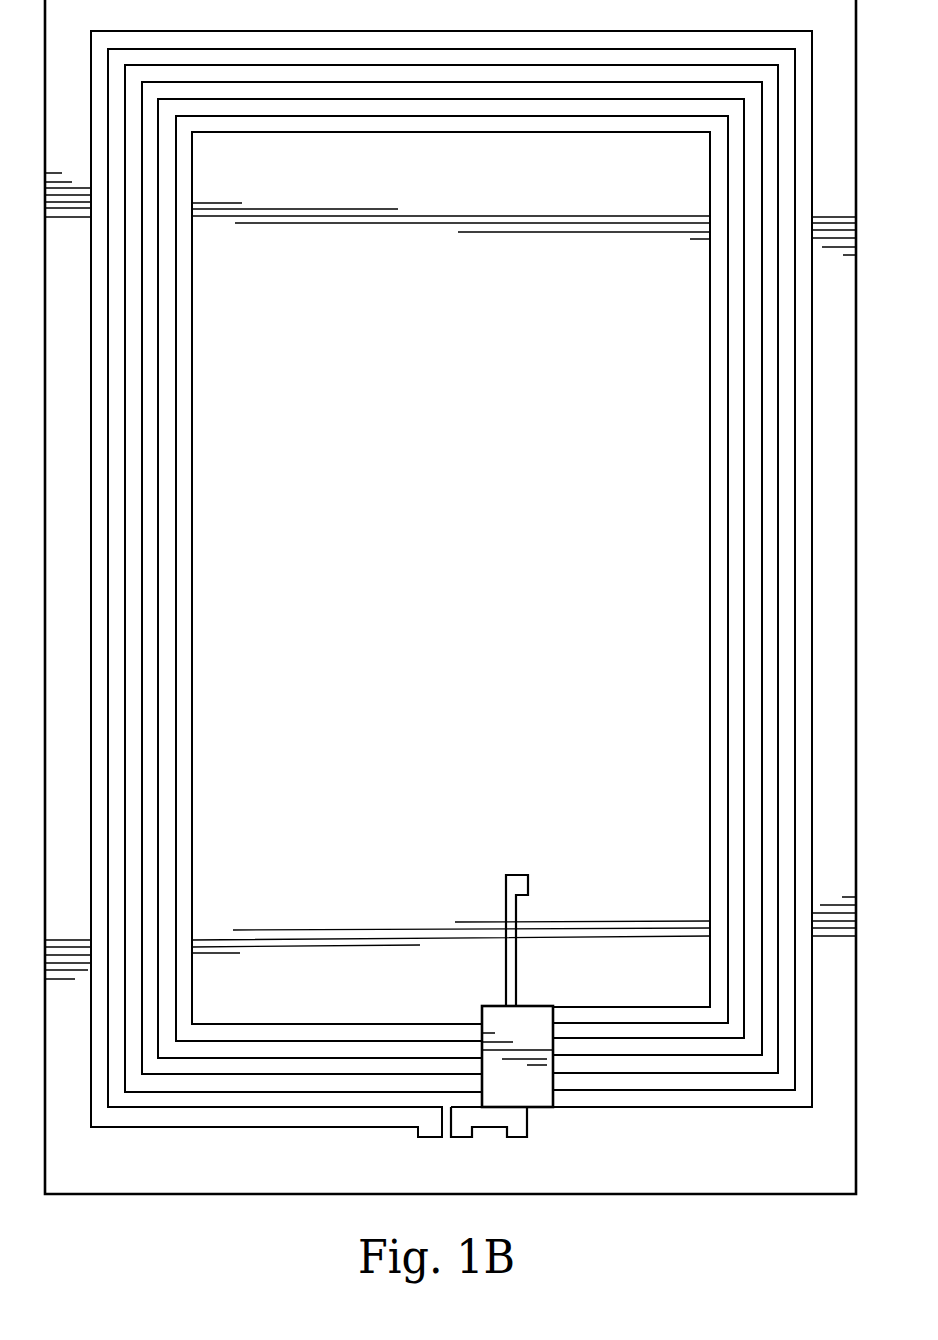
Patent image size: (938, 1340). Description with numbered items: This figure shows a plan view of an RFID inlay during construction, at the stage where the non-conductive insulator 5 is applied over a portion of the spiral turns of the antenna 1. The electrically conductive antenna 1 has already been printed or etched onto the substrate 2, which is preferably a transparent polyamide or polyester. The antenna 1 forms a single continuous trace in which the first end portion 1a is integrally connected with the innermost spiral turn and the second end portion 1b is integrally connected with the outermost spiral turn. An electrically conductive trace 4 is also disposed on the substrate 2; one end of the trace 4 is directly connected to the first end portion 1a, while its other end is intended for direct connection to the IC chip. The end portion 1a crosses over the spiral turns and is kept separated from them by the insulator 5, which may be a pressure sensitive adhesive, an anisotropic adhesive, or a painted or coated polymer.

The antenna 1 is at (196, 372).
The first end portion 1a is at (513, 908).
The second end portion 1b is at (432, 1138).
The substrate 2 is at (77, 1173).
The electrically conductive trace 4 is at (517, 1125).
The non-conductive insulator 5 is at (495, 1015).